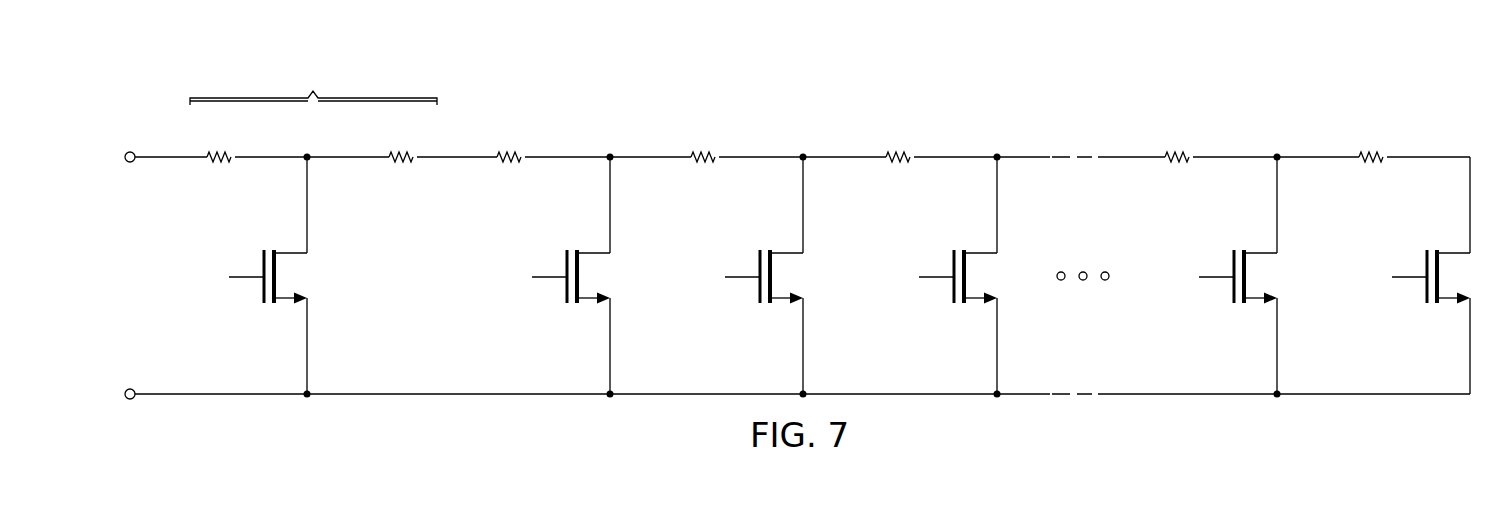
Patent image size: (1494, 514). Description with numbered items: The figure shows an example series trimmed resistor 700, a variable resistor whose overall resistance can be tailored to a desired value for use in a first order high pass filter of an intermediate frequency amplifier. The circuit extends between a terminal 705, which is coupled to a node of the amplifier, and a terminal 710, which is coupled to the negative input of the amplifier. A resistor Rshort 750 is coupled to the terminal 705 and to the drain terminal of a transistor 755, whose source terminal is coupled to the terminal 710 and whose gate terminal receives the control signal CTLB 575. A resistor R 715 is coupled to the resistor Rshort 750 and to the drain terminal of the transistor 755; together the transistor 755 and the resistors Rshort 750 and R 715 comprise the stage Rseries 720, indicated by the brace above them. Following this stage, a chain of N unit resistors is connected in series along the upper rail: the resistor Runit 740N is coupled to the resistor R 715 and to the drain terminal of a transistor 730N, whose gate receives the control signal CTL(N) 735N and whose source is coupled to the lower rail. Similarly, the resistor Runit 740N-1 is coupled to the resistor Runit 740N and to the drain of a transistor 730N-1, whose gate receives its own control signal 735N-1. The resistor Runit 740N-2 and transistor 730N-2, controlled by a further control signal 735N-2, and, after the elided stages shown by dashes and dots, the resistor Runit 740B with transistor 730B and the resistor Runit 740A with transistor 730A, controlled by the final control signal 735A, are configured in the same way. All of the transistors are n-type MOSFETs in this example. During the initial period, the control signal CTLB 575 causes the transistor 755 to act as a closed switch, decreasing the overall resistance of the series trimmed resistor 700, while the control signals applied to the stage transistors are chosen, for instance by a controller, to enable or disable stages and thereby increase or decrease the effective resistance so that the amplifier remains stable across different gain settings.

The series trimmed resistor 700 is at (1054, 84).
The terminal 705 is at (128, 151).
The terminal 710 is at (128, 400).
The resistor R 715 is at (404, 170).
The stage Rseries 720 is at (313, 66).
The resistor Rshort 750 is at (223, 170).
The transistor 755 is at (262, 258).
The control signal CTLB 575 is at (248, 282).
The resistor Runit 740N is at (511, 170).
The resistor Runit 740N-1 is at (704, 170).
The resistor Runit 740N-2 is at (899, 170).
The resistor Runit 740B is at (1179, 170).
The resistor Runit 740A is at (1374, 170).
The transistor 730N is at (565, 258).
The transistor 730N-1 is at (758, 258).
The transistor 730N-2 is at (952, 258).
The transistor 730B is at (1232, 258).
The transistor 730A is at (1425, 258).
The control signal CTL(N) 735N is at (551, 282).
The control signal CTL(N-1) 735N-1 is at (744, 282).
The control signal CTL(N-2) 735N-2 is at (936, 282).
The control signal CTL(0) 735A is at (1217, 282).